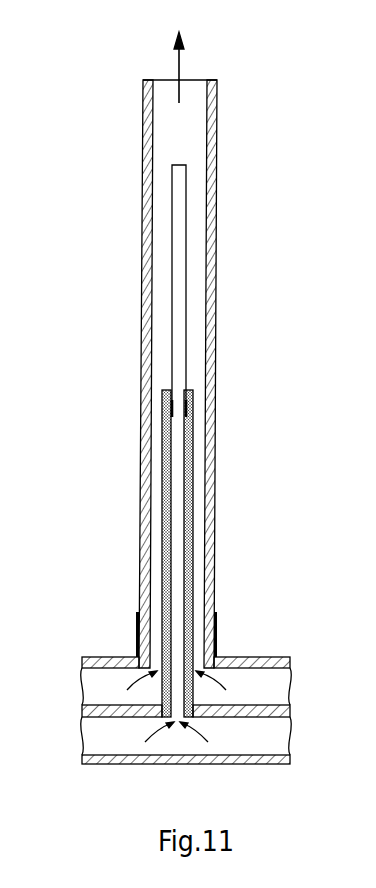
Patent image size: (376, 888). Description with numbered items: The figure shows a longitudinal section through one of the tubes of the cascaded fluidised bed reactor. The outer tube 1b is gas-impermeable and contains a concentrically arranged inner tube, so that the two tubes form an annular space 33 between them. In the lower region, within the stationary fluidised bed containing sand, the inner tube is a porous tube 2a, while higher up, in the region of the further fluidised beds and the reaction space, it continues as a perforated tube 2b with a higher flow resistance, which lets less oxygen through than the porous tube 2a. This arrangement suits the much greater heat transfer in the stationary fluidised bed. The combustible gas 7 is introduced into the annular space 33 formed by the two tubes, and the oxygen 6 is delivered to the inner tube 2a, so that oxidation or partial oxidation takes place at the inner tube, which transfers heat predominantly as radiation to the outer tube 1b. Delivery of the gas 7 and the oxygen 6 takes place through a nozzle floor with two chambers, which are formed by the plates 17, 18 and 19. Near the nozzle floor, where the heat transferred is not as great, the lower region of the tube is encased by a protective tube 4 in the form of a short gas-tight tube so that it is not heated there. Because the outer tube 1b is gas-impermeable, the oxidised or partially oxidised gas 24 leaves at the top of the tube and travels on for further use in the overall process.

The tube 1b is at (212, 337).
The perforated tube 2b is at (187, 290).
The porous tube 2a is at (192, 513).
The annular space 33 is at (195, 217).
The protective tube 4 is at (215, 630).
The plate 18 is at (103, 657).
The plate 19 is at (108, 710).
The plate 17 is at (107, 765).
The combustible gas 7 is at (310, 688).
The oxygen 6 is at (310, 738).
The oxidised or partially oxidised gas 24 is at (194, 59).